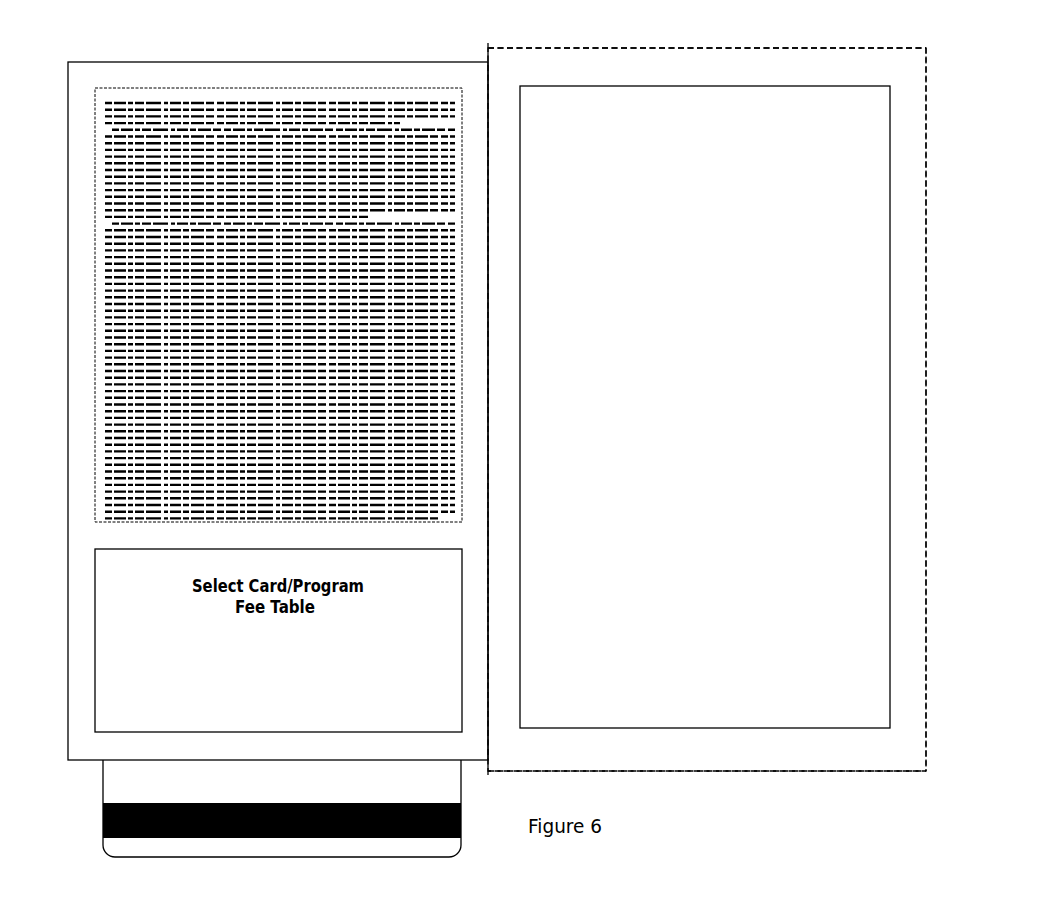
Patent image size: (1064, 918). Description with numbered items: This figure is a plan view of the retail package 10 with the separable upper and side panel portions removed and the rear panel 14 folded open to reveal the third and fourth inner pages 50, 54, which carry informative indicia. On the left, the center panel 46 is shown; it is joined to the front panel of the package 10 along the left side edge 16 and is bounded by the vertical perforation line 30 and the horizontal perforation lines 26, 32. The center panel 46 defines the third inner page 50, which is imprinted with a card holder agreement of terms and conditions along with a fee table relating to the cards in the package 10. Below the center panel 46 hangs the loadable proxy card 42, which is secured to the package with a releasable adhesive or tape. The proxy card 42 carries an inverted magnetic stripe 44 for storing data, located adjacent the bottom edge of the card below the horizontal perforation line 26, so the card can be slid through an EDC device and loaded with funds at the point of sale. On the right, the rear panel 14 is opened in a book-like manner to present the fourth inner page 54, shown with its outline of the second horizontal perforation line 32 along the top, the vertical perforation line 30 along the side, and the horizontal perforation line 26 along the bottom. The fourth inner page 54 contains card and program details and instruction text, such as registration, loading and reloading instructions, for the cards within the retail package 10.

The retail package 10 is at (976, 137).
The rear panel 14 is at (910, 320).
The left side edge 16 is at (490, 80).
The horizontal perforation line 26 is at (872, 772).
The vertical perforation line 30 is at (930, 402).
The second horizontal perforation line 32 is at (700, 46).
The proxy card 42 is at (118, 775).
The magnetic stripe 44 is at (103, 828).
The center panel 46 is at (296, 72).
The third inner page 50 is at (276, 210).
The fourth inner page 54 is at (706, 311).